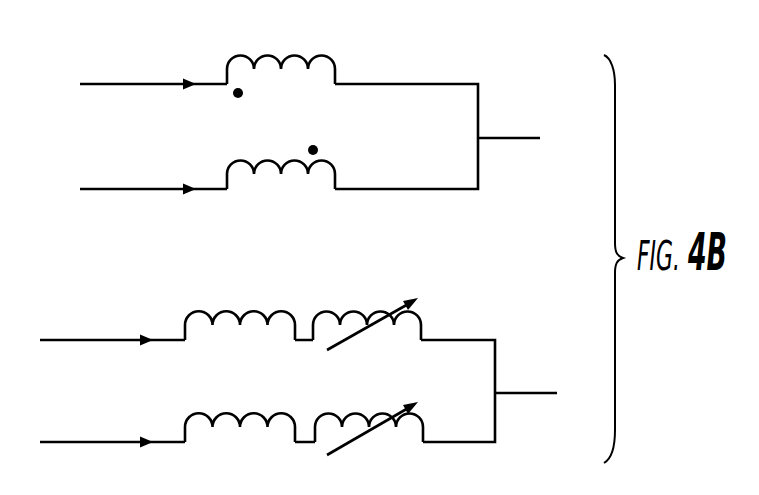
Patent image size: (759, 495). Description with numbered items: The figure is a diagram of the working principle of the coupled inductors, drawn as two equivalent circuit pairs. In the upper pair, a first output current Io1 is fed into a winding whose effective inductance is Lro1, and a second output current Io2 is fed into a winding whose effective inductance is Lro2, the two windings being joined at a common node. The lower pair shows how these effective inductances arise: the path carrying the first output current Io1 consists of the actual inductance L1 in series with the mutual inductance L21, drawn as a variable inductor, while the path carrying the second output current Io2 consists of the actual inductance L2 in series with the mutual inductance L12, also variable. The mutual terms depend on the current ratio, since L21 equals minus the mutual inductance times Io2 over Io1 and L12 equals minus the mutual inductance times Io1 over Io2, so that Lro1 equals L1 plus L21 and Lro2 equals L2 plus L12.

The first output current Io1 is at (133, 197).
The second output current Io2 is at (133, 301).
The first combined inductance Lro1 is at (281, 61).
The second combined inductance Lro2 is at (281, 159).
The first actual inductance L1 is at (240, 310).
The second actual inductance L2 is at (240, 412).
The first mutual inductance L21 is at (367, 315).
The second mutual inductance L12 is at (369, 419).